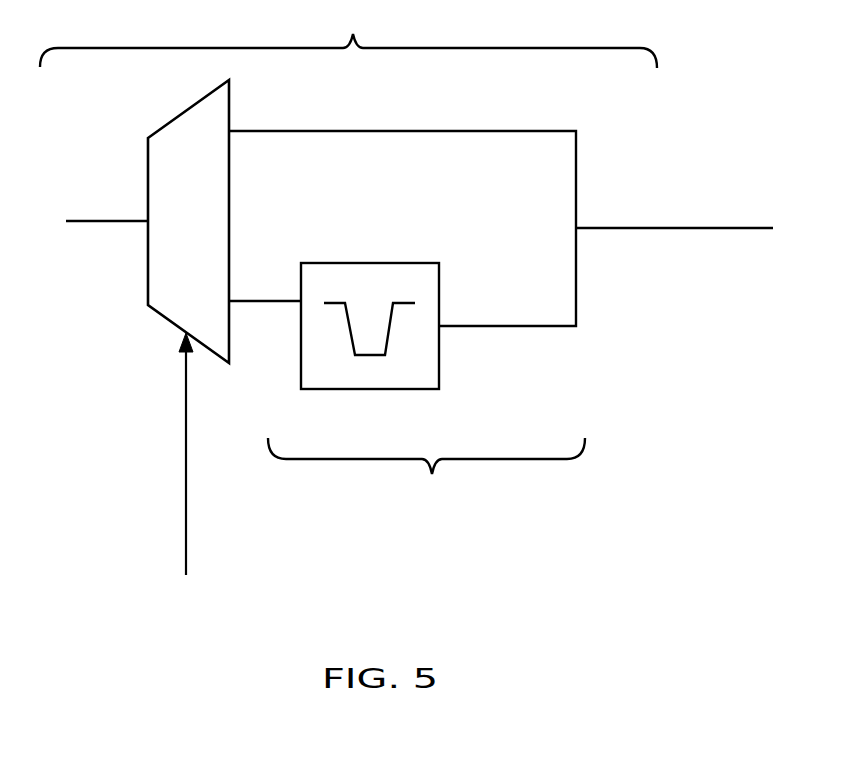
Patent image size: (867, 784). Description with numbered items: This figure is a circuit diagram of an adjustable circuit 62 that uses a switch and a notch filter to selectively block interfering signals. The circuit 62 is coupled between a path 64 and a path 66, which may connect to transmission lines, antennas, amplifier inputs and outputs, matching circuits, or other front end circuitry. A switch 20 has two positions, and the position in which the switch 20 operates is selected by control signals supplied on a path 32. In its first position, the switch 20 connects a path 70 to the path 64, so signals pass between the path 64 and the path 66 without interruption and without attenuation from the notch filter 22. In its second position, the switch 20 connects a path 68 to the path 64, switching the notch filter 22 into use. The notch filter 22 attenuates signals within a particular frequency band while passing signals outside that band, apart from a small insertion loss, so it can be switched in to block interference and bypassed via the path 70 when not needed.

The circuit 62 is at (348, 36).
The switch 20 is at (160, 316).
The path 64 is at (98, 221).
The path 70 is at (365, 131).
The notch filter 22 is at (405, 389).
The path 68 is at (426, 472).
The path 66 is at (666, 228).
The path 32 is at (184, 503).